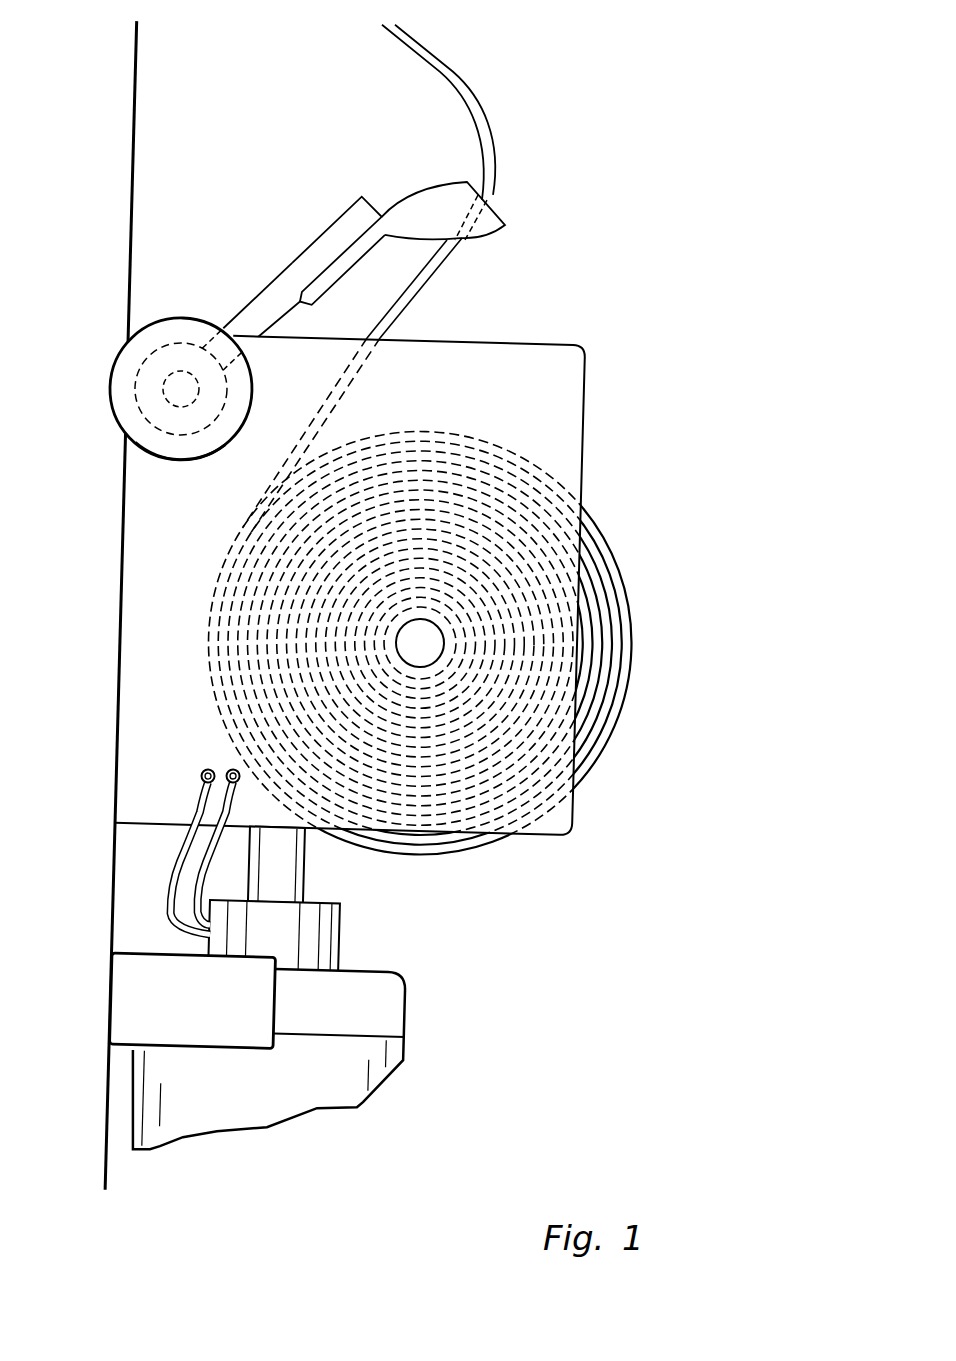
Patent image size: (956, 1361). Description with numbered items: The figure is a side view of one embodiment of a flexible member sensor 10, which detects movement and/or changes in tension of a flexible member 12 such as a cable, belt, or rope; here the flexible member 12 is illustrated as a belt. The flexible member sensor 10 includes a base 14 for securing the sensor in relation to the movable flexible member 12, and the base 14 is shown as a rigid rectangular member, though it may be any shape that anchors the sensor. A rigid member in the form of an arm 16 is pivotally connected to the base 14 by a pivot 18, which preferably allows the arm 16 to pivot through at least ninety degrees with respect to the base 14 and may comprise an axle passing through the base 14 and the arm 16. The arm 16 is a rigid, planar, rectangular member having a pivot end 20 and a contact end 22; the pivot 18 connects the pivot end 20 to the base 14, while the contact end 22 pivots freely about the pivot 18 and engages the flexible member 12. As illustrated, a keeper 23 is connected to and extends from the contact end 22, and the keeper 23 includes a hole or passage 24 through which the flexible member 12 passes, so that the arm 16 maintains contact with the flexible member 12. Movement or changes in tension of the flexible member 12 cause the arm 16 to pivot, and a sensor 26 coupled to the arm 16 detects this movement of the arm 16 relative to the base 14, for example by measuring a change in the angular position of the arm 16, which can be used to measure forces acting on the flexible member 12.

The flexible member sensor 10 is at (365, 610).
The flexible member 12 is at (435, 79).
The base 14 is at (568, 378).
The arm 16 is at (255, 291).
The pivot 18 is at (153, 392).
The pivot end 20 is at (122, 356).
The contact end 22 is at (312, 223).
The keeper 23 is at (479, 228).
The passage 24 is at (481, 200).
The sensor 26 is at (173, 467).